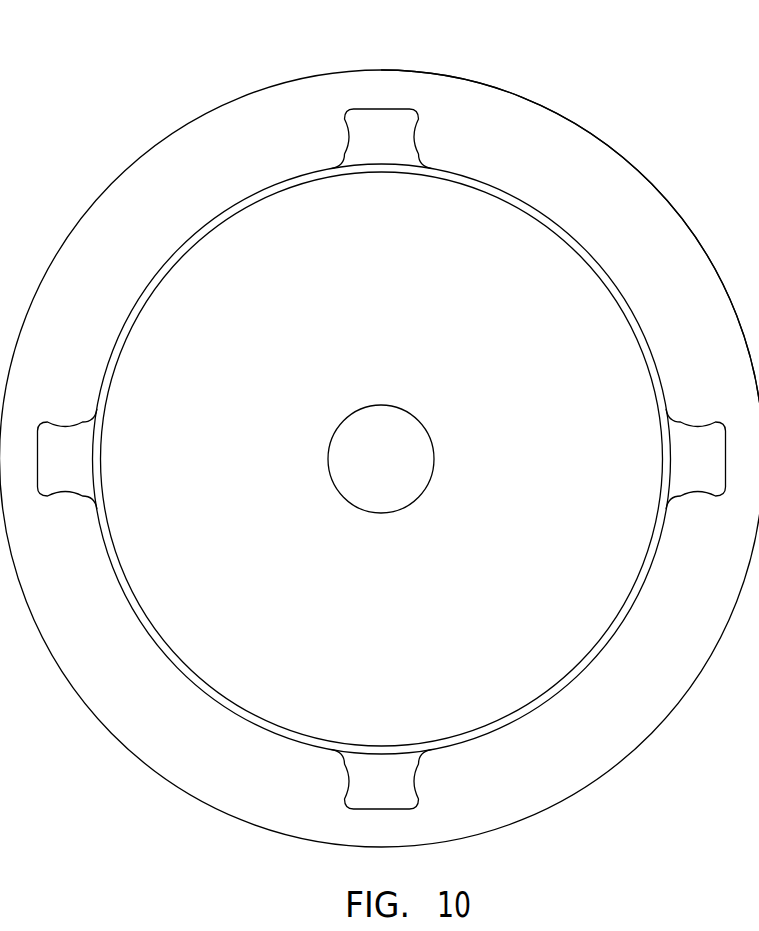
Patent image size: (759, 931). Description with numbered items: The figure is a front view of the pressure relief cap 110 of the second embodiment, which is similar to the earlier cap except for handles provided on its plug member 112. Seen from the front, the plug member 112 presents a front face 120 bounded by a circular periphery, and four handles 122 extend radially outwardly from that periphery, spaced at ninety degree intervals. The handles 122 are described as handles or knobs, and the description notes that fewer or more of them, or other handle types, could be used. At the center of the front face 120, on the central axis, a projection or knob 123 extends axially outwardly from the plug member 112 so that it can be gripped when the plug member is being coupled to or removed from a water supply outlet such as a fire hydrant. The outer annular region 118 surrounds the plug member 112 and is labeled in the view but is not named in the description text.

The pressure relief cap 110 is at (536, 62).
The outer annular plate 118 is at (158, 123).
The plug member 112 is at (182, 226).
The front face 120 is at (237, 688).
The handles 122 is at (418, 137).
The projection or knob 123 is at (427, 432).